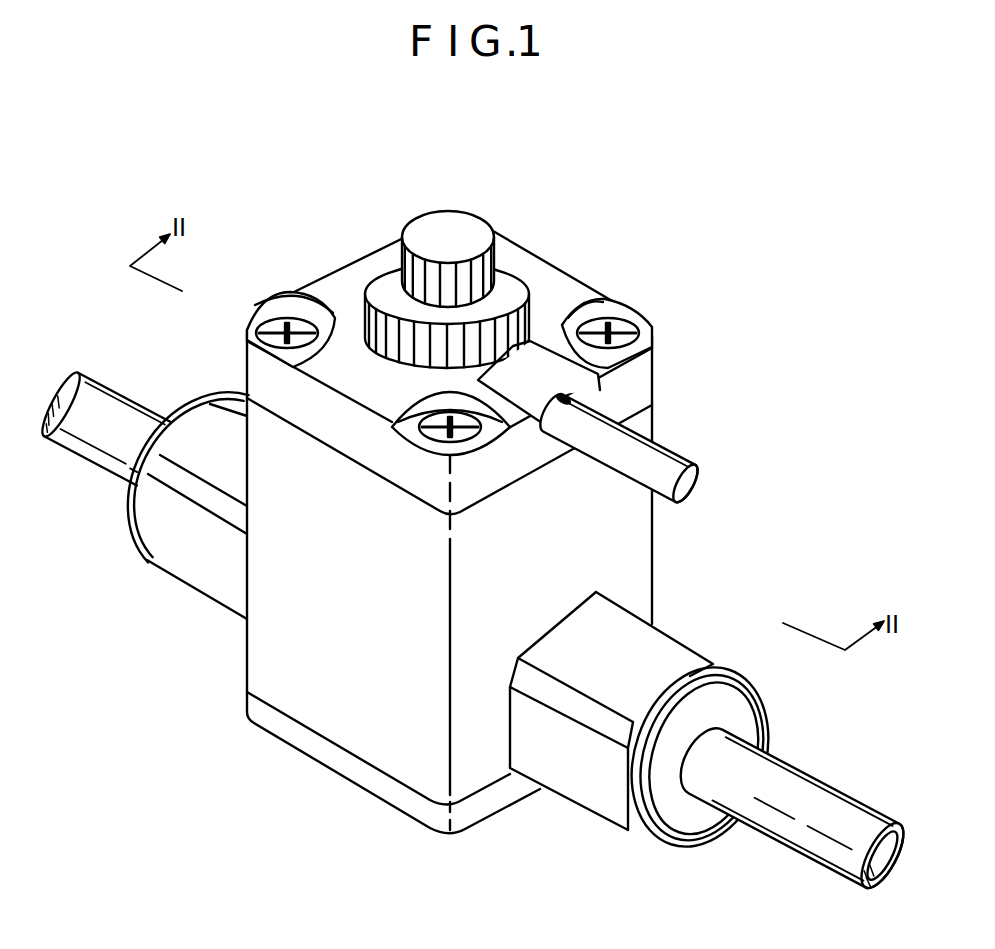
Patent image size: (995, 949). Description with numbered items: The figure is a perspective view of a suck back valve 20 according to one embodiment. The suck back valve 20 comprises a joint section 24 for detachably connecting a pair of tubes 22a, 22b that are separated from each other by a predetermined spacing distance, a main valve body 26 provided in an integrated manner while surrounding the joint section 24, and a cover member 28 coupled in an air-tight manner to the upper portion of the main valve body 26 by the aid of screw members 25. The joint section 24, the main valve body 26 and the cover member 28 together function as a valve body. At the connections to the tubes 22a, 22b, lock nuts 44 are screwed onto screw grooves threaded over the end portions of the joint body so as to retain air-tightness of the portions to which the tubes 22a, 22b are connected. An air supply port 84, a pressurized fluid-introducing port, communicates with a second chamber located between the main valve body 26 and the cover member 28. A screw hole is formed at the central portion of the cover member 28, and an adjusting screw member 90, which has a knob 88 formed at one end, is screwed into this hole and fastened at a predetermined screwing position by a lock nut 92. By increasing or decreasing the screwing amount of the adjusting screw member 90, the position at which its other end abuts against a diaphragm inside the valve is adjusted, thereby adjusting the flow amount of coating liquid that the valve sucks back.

The suck back valve 20 is at (678, 218).
The tube 22a is at (99, 410).
The tube 22b is at (757, 802).
The joint section 24 is at (426, 636).
The screw member 25 is at (283, 320).
The main valve body 26 is at (499, 581).
The cover member 28 is at (449, 320).
The lock nut 44 is at (210, 450).
The air supply port 84 is at (564, 395).
The knob 88 is at (472, 228).
The adjusting screw member 90 is at (458, 166).
The lock nut 92 is at (390, 284).